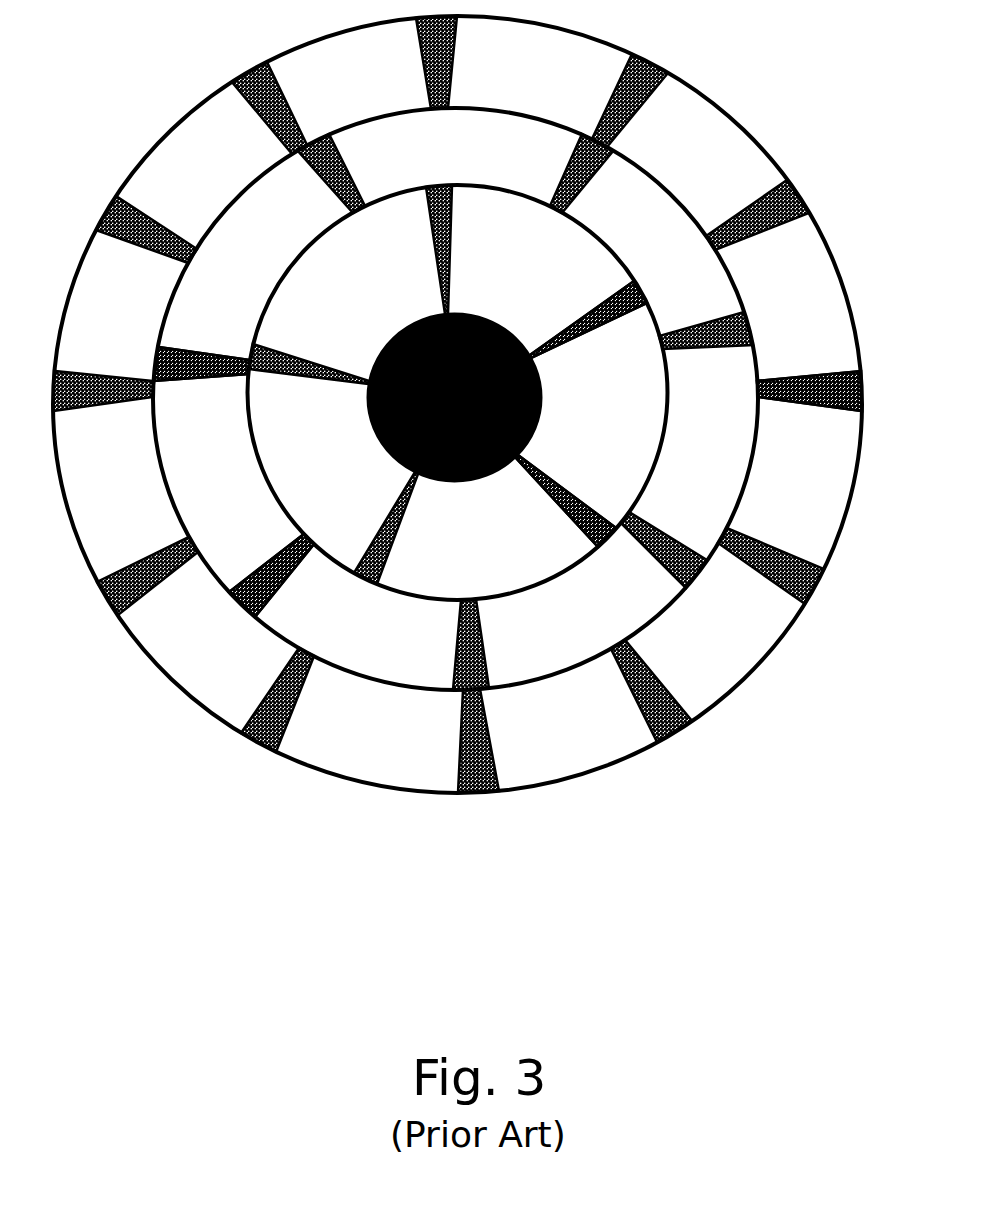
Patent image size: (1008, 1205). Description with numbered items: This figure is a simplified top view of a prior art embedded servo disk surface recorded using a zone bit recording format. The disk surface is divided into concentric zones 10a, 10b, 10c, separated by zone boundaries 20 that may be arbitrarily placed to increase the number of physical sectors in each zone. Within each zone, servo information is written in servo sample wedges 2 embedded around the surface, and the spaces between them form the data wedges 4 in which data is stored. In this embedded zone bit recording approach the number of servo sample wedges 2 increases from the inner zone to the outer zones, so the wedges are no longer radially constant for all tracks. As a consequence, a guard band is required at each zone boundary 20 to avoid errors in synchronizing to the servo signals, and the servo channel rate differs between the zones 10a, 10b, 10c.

The servo sample wedges 2 is at (176, 378).
The data wedges 4 is at (217, 503).
The zone boundaries 20 is at (581, 568).
The concentric zone 10a is at (300, 272).
The concentric zone 10b is at (417, 658).
The concentric zone 10c is at (243, 742).